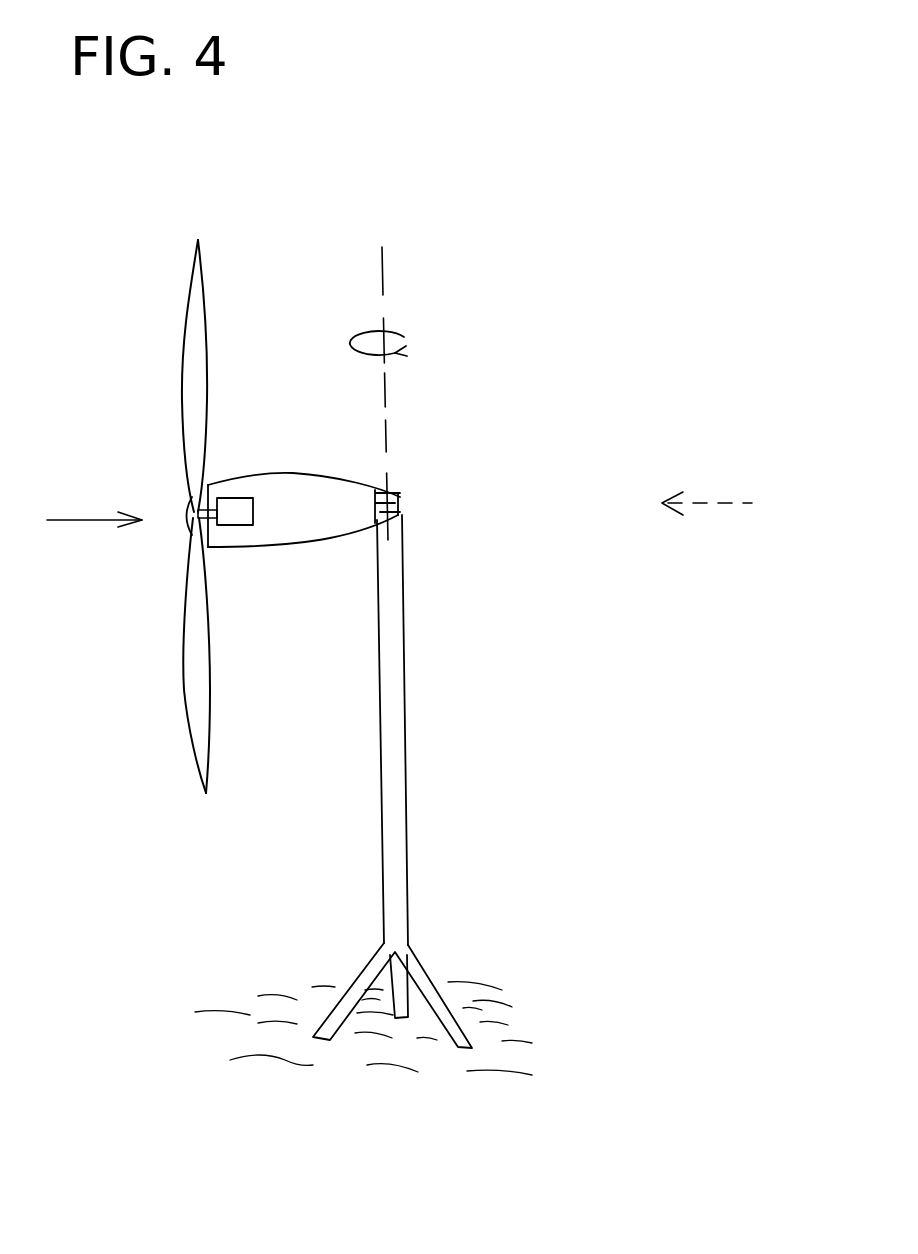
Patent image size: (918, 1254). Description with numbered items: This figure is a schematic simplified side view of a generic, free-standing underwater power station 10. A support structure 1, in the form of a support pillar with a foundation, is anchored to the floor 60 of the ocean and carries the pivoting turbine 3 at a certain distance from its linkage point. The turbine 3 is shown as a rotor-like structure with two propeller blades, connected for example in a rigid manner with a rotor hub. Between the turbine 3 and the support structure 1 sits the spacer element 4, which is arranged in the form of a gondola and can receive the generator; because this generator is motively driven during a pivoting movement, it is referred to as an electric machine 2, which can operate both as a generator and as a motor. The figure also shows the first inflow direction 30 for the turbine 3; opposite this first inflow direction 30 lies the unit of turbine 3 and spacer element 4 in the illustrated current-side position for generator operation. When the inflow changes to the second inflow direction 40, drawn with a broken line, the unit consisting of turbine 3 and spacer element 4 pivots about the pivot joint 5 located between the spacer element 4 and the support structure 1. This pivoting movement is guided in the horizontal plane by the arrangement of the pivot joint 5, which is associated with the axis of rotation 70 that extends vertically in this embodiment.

The support structure 1 is at (393, 757).
The electric machine 2 is at (233, 508).
The turbine 3 is at (193, 338).
The spacer element 4 is at (315, 520).
The pivot joint 5 is at (390, 493).
The wind turbine 10 is at (335, 228).
The first inflow direction 30 is at (93, 522).
The second inflow direction 40 is at (740, 503).
The floor 60 is at (571, 982).
The axis of rotation 70 is at (387, 378).